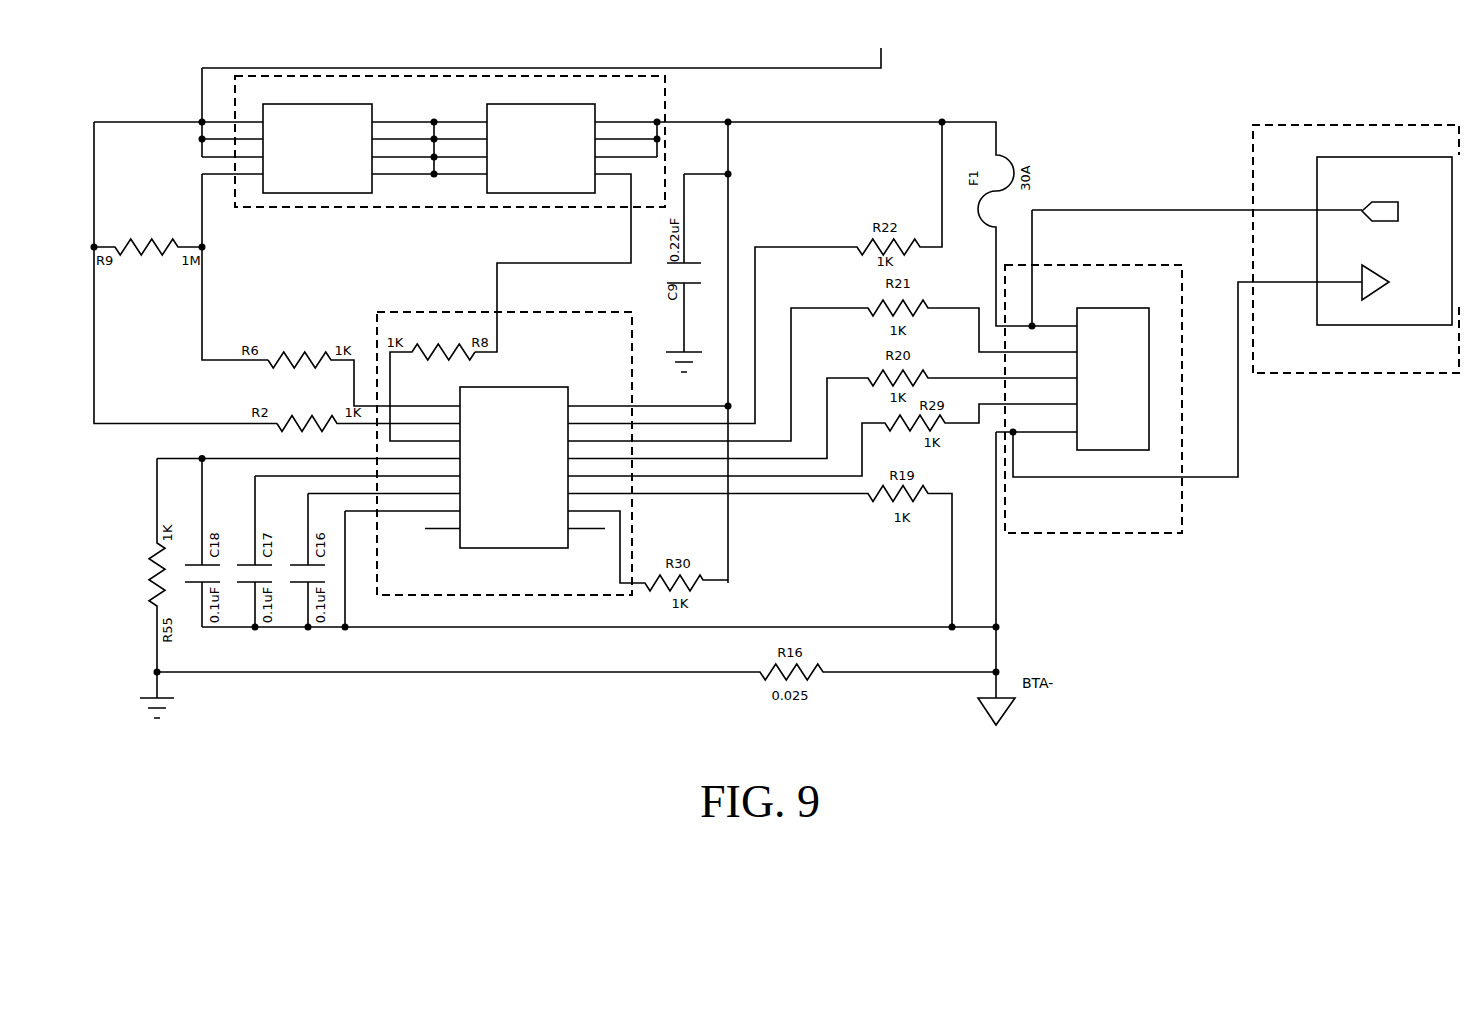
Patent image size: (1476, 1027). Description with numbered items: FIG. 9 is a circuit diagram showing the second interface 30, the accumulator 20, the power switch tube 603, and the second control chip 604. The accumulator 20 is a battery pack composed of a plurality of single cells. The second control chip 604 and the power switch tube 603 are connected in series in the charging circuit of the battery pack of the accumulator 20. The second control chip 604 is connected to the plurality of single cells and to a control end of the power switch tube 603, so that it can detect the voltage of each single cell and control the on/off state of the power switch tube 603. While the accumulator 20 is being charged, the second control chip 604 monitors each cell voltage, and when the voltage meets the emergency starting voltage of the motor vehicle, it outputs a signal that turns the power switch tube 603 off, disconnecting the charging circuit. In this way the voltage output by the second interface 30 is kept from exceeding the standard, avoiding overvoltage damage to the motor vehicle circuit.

The power switch tube 603 is at (368, 210).
The second control chip 604 is at (411, 308).
The accumulator 20 is at (1088, 265).
The second interface 30 is at (1355, 122).